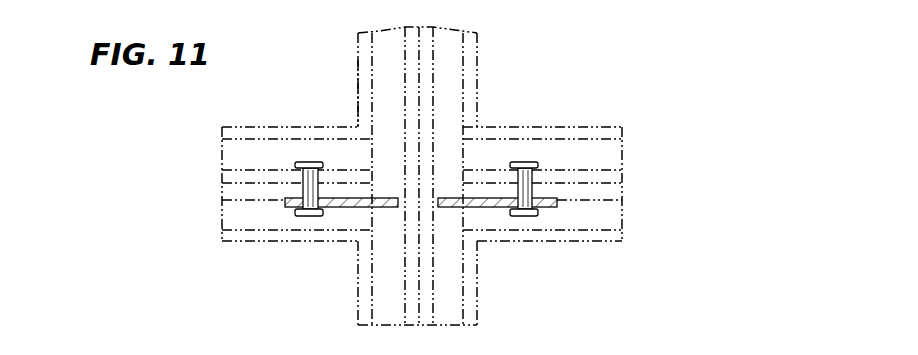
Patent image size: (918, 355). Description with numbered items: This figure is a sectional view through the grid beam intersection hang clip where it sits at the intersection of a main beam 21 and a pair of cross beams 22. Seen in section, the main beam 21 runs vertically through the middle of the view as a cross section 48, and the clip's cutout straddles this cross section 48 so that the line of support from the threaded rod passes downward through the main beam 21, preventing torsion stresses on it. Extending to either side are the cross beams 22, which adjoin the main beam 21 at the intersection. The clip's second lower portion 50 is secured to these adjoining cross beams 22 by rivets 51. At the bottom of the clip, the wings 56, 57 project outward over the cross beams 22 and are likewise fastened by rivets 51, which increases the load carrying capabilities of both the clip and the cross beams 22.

The main beam 21 is at (478, 53).
The cross beams 22 is at (316, 237).
The cross section 48 is at (358, 95).
The second lower portion 50 is at (483, 190).
The rivets 51 is at (298, 183).
The wing 56 is at (284, 205).
The wing 57 is at (546, 209).